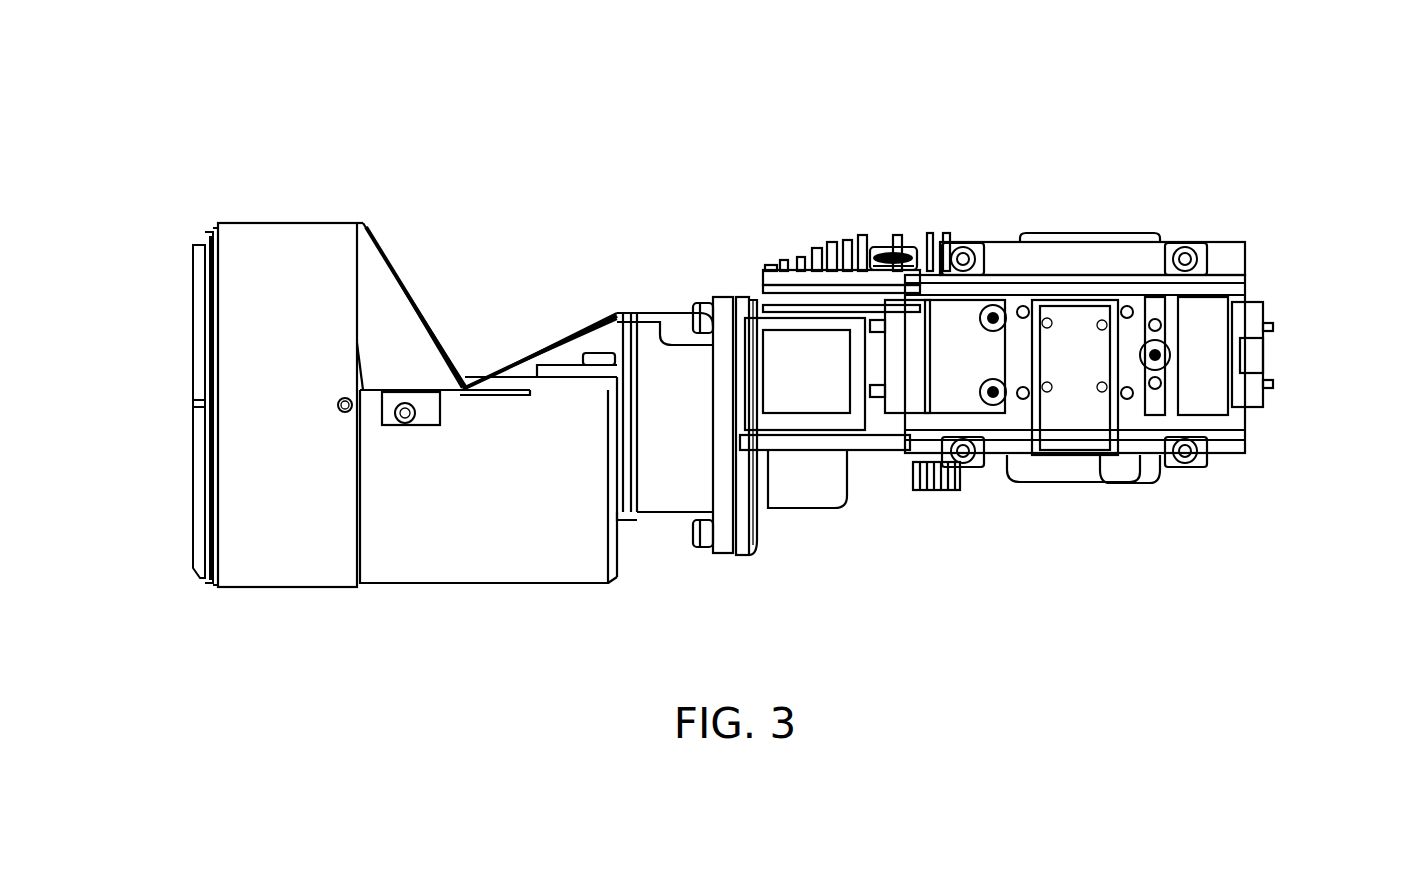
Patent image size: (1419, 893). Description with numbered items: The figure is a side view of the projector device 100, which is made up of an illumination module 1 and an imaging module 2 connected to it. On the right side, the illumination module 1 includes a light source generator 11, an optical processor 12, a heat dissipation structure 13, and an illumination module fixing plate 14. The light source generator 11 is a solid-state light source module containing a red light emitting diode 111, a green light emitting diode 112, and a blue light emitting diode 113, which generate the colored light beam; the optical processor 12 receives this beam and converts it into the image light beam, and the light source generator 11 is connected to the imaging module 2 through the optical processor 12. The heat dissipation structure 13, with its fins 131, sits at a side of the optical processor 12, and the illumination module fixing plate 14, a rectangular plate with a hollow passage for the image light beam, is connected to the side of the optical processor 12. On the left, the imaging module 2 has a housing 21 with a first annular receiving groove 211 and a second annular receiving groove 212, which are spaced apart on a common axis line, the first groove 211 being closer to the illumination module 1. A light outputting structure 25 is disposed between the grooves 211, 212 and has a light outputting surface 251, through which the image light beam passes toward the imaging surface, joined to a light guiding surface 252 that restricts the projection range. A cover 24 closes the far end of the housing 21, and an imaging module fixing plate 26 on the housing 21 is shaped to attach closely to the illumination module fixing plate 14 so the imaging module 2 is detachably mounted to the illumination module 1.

The projector device 100 is at (163, 83).
The illumination module 1 is at (1343, 395).
The imaging module 2 is at (1343, 560).
The light source generator 11 is at (855, 545).
The red light emitting diode 111 is at (897, 360).
The green light emitting diode 112 is at (1068, 392).
The blue light emitting diode 113 is at (1255, 355).
The optical processor 12 is at (1100, 243).
The heat dissipation structure 13 is at (918, 156).
The heat dissipation fins 131 is at (830, 245).
The illumination module fixing plate 14 is at (742, 297).
The housing 21 is at (480, 570).
The first annular receiving groove 211 is at (645, 330).
The second annular receiving groove 212 is at (292, 245).
The cover 24 is at (205, 375).
The light outputting structure 25 is at (420, 213).
The light outputting surface 251 is at (437, 315).
The light guiding surface 252 is at (520, 350).
The imaging module fixing plate 26 is at (722, 298).